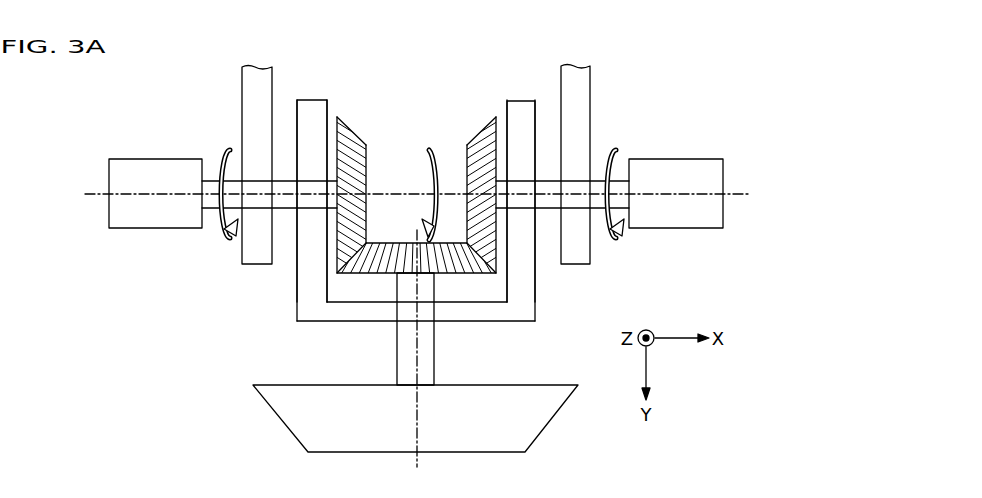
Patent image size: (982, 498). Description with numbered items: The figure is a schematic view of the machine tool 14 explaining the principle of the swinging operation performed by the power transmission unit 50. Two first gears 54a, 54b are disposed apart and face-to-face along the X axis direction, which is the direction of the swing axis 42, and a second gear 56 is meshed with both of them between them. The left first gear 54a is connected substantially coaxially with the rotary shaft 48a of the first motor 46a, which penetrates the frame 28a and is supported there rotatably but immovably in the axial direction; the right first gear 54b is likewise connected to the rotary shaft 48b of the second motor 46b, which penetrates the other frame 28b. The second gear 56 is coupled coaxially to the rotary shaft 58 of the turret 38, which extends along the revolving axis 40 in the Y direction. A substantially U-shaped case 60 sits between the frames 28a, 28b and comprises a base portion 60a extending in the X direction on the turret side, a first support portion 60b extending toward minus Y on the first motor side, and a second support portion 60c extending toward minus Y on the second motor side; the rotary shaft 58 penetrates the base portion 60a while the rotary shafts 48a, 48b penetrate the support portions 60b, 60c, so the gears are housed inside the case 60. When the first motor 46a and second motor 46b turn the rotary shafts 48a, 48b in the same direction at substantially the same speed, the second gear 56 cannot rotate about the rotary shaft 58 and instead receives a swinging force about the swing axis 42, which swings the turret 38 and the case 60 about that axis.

The machine tool 14 is at (151, 258).
The frame 28a is at (242, 87).
The frame 28b is at (592, 88).
The turret 38 is at (507, 392).
The revolving axis 40 is at (420, 418).
The swing axis 42 is at (399, 190).
The first motor 46a is at (132, 158).
The second motor 46b is at (688, 158).
The rotary shaft 48a is at (313, 181).
The rotary shaft 48b is at (518, 181).
The power transmission unit 50 is at (417, 140).
The first gear 54a is at (359, 129).
The first gear 54b is at (486, 130).
The second gear 56 is at (416, 182).
The rotary shaft 58 is at (397, 344).
The case 60 is at (417, 240).
The base portion 60a is at (473, 312).
The first support portion 60b is at (297, 279).
The second support portion 60c is at (527, 281).